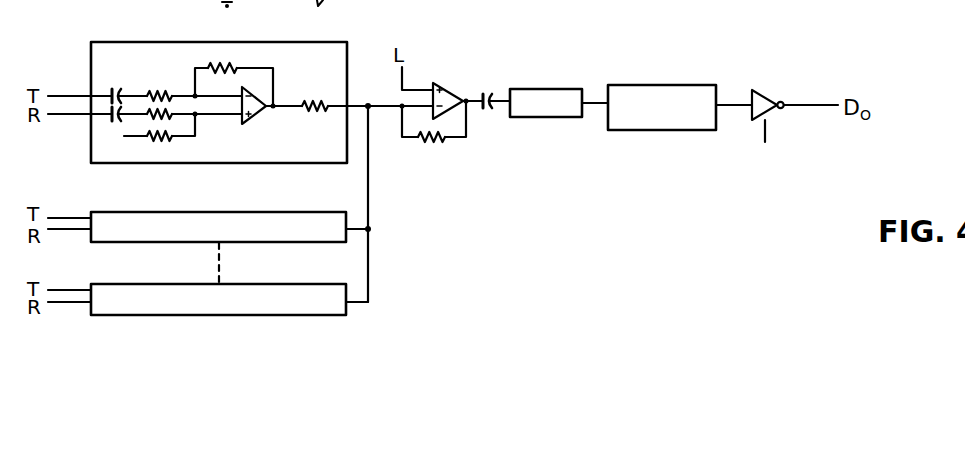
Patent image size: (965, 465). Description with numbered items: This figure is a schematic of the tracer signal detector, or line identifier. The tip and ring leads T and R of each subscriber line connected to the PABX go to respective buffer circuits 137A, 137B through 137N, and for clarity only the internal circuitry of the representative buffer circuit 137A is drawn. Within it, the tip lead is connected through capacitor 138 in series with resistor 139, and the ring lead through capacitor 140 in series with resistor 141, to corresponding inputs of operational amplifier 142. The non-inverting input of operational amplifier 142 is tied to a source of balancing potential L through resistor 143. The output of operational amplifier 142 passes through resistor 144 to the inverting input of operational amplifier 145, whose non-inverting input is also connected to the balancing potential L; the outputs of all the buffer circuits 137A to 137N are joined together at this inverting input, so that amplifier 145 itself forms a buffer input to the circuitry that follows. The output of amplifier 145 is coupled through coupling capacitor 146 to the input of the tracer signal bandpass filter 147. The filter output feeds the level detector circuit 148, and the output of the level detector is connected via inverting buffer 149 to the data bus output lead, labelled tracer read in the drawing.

The buffer circuit 137A is at (180, 46).
The buffer circuit 137B is at (162, 243).
The buffer circuit 137N is at (162, 316).
The capacitor 138 is at (117, 87).
The resistor 139 is at (171, 90).
The capacitor 140 is at (110, 122).
The resistor 141 is at (172, 111).
The operational amplifier 142 is at (250, 110).
The resistor 143 is at (166, 142).
The resistor 144 is at (326, 104).
The operational amplifier 145 is at (447, 94).
The coupling capacitor 146 is at (481, 88).
The tracer signal bandpass filter 147 is at (540, 88).
The level detector circuit 148 is at (640, 85).
The inverting buffer 149 is at (788, 80).